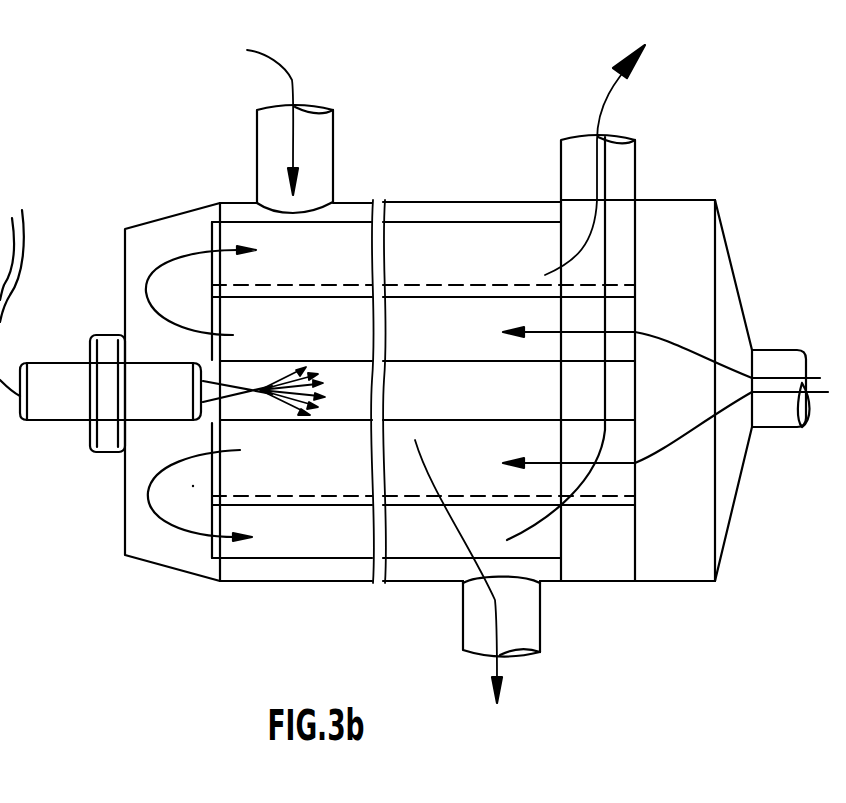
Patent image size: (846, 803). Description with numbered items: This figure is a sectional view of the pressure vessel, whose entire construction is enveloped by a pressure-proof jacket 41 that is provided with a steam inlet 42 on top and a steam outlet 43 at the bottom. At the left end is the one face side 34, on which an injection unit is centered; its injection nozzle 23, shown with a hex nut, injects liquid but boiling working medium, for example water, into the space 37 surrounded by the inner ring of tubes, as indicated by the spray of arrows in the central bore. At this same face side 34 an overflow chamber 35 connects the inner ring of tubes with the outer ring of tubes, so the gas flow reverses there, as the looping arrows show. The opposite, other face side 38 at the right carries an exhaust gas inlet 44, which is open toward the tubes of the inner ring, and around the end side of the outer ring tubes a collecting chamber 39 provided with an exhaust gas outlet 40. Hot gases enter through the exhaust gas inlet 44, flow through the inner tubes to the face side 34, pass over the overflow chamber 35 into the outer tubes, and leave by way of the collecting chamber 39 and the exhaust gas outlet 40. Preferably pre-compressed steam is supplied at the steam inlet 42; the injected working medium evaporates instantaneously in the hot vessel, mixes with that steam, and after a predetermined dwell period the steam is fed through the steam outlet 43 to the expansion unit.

The injection nozzle 23 is at (55, 404).
The face side 34 is at (200, 515).
The overflow chamber 35 is at (150, 243).
The space 37 is at (418, 396).
The other face side 38 is at (637, 248).
The collecting chamber 39 is at (623, 540).
The exhaust gas outlet 40 is at (583, 147).
The pressure-proof jacket 41 is at (433, 203).
The steam inlet 42 is at (290, 73).
The steam outlet 43 is at (497, 676).
The exhaust gas inlet 44 is at (770, 415).